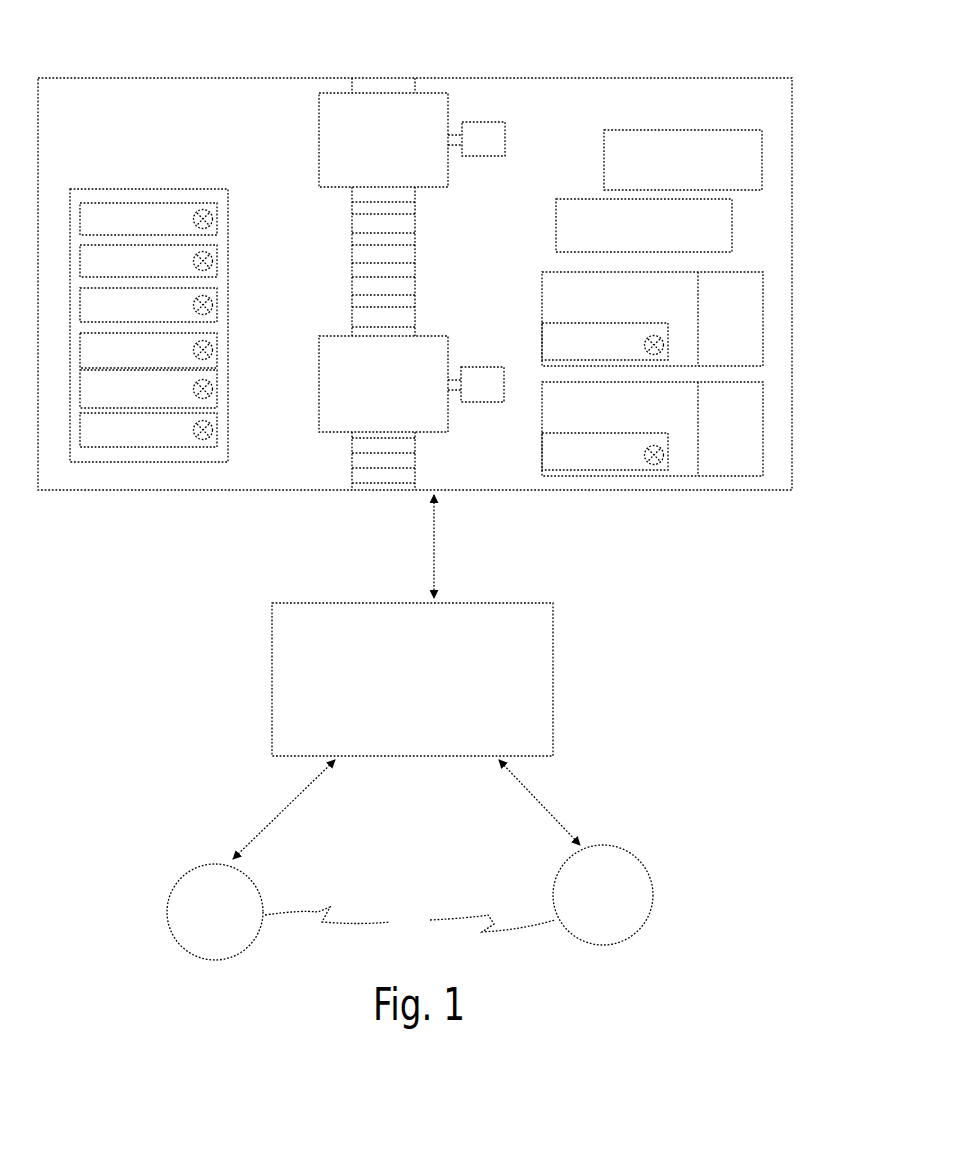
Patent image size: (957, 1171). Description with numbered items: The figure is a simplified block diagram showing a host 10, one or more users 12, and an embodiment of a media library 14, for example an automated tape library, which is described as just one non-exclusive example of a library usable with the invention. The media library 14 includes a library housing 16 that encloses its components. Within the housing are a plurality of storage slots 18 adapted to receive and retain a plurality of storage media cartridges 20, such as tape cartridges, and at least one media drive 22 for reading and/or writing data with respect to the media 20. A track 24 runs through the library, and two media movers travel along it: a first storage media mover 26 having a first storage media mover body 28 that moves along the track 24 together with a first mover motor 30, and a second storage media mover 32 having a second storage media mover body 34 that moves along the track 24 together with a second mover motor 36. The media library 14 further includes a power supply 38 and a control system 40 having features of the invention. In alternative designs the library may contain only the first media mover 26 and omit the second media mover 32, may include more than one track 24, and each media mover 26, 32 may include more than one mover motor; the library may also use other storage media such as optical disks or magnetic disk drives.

The host 10 is at (553, 670).
The users 12 is at (410, 921).
The media library 14 is at (748, 500).
The library housing 16 is at (792, 296).
The storage slots 18 is at (205, 322).
The storage media cartridges 20 is at (175, 428).
The media drive 22 is at (683, 333).
The track 24 is at (392, 260).
The first storage media mover 26 is at (419, 346).
The first storage media mover body 28 is at (440, 336).
The first mover motor 30 is at (476, 357).
The second storage media mover 32 is at (431, 96).
The second storage media mover body 34 is at (428, 92).
The second mover motor 36 is at (492, 123).
The power supply 38 is at (668, 173).
The control system 40 is at (630, 240).